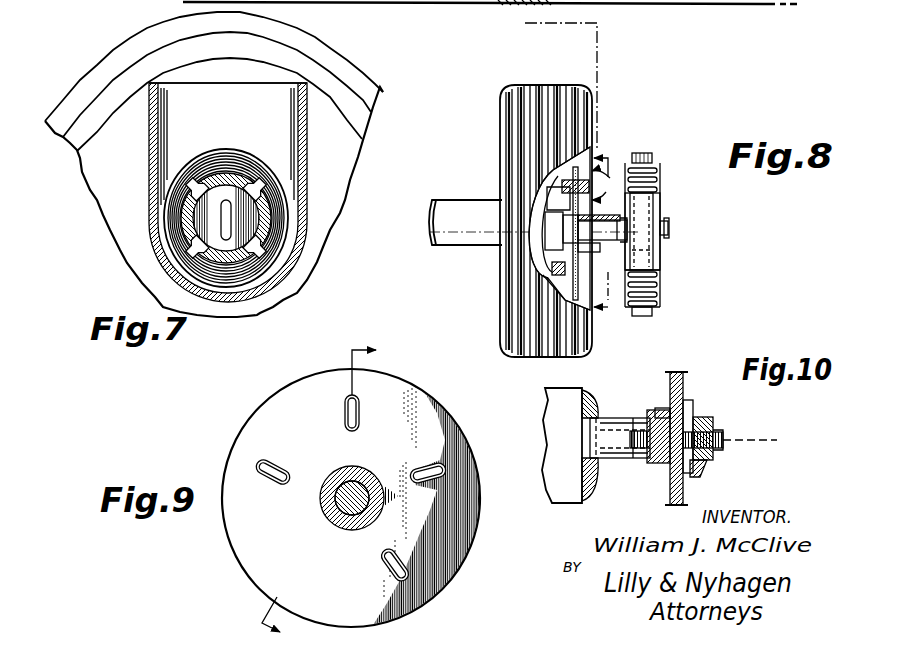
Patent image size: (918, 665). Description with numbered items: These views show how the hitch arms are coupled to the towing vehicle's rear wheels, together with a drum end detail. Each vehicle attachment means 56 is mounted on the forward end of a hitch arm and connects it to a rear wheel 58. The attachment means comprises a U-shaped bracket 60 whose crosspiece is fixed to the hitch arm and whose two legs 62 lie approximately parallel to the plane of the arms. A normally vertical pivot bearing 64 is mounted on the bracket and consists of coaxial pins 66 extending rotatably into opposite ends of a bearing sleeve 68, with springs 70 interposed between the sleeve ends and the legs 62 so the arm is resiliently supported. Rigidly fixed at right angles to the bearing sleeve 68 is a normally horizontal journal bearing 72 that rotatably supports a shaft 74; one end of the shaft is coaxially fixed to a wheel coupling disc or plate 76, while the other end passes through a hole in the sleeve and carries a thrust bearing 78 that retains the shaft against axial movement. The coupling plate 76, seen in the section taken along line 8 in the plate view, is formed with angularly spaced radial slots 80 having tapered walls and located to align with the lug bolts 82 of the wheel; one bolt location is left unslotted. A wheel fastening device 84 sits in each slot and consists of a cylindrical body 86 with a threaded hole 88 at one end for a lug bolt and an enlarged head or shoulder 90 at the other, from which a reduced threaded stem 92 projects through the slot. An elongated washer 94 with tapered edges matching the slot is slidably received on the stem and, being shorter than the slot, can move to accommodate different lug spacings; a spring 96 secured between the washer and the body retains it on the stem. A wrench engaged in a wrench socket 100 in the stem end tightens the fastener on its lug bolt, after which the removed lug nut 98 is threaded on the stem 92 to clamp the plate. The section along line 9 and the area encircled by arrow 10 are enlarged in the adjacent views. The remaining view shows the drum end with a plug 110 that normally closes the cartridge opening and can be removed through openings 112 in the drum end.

In FIG. 9, the section line 8— 8 is at (324, 487).
In FIG. 8, the section line 9— 9 is at (601, 235).
In FIG. 8, the encircling arrow 10 is at (602, 185).
In FIG. 8, the vehicle attachment means 56 is at (687, 230).
In FIG. 8, the rear wheel 58 is at (545, 85).
In FIG. 8, the U-shaped bracket 60 is at (660, 276).
In FIG. 8, the leg 62 is at (658, 158).
In FIG. 8, the pivot bearing 64 is at (670, 211).
In FIG. 8, the pin 66 is at (660, 170).
In FIG. 8, the bearing sleeve 68 is at (652, 257).
In FIG. 8, the spring 70 is at (660, 183).
In FIG. 8, the journal bearing 72 is at (628, 230).
In FIG. 8, the shaft 74 is at (590, 246).
In FIG. 9, the shaft 74 is at (338, 522).
In FIG. 8, the wheel coupling disc or plate 76 is at (578, 284).
In FIG. 9, the wheel coupling disc or plate 76 is at (453, 418).
In FIG. 10, the wheel coupling disc or plate 76 is at (683, 382).
In FIG. 8, the thrust bearing 78 is at (670, 240).
In FIG. 9, the radial slot 80 is at (345, 403).
In FIG. 8, the lug bolt 82 is at (557, 178).
In FIG. 10, the lug bolt 82 is at (650, 412).
In FIG. 10, the wheel fastening device 84 is at (636, 462).
In FIG. 10, the cylindrical body 86 is at (632, 418).
In FIG. 10, the threaded hole 88 is at (646, 465).
In FIG. 10, the enlarged head or shoulder 90 is at (662, 406).
In FIG. 10, the threaded stem 92 is at (724, 433).
In FIG. 10, the elongated washer 94 is at (694, 406).
In FIG. 10, the spring 96 is at (700, 468).
In FIG. 10, the lug nut 98 is at (723, 452).
In FIG. 10, the wrench socket 100 is at (765, 432).
In FIG. 7, the plug 110 is at (250, 266).
In FIG. 7, the opening 112 is at (256, 195).